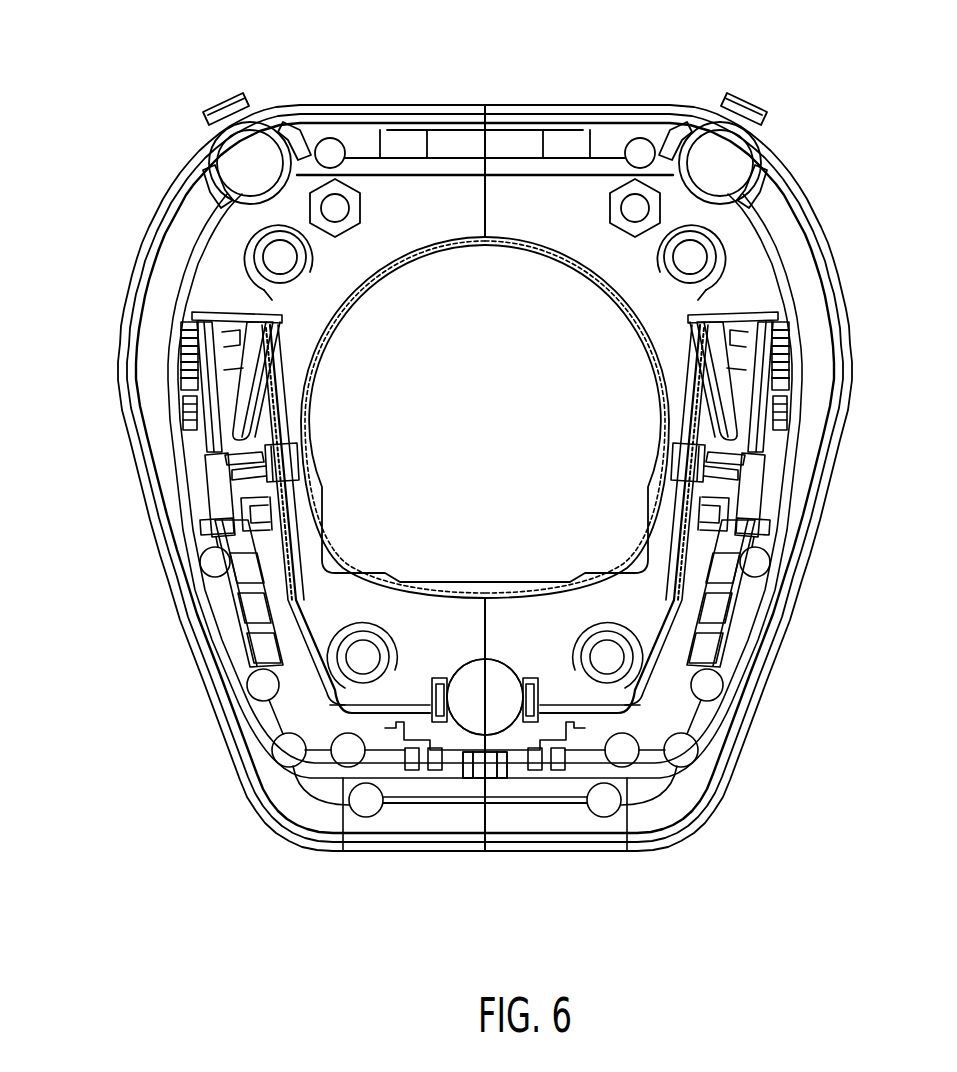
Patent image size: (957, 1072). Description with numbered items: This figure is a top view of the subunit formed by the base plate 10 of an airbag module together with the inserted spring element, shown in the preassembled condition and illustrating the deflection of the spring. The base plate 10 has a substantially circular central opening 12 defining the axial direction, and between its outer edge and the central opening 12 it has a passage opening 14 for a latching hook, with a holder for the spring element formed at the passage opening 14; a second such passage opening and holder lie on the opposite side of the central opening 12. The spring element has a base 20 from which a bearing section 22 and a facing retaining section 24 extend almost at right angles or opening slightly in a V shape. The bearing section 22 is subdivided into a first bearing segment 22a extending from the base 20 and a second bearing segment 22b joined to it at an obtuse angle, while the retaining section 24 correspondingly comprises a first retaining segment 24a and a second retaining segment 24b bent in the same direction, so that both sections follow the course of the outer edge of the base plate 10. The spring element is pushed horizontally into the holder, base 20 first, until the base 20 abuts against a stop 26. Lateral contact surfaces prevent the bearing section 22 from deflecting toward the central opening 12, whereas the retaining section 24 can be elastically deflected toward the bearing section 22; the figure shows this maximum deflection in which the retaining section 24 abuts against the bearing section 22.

The base plate 10 is at (455, 98).
The central opening 12 is at (548, 302).
The passage opening 14 is at (187, 425).
The base 20 is at (330, 552).
The bearing section 22 is at (284, 427).
The first bearing segment 22a is at (240, 484).
The second bearing segment 22b is at (265, 384).
The retaining section 24 is at (230, 390).
The first retaining segment 24a is at (217, 482).
The second retaining segment 24b is at (178, 355).
The stop 26 is at (295, 562).